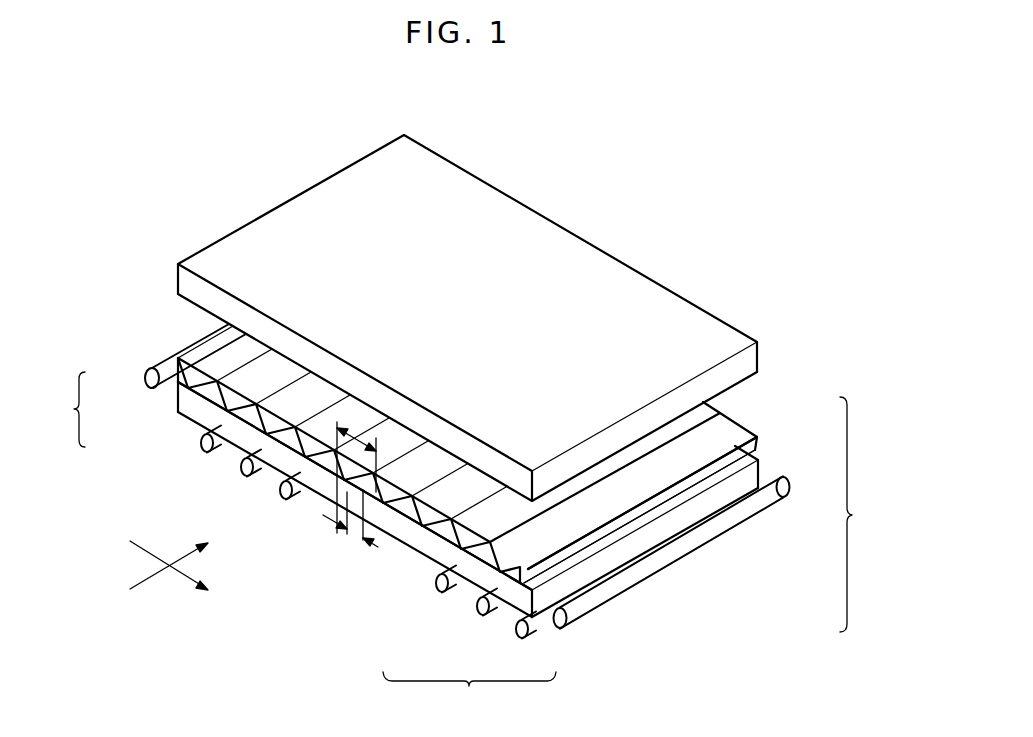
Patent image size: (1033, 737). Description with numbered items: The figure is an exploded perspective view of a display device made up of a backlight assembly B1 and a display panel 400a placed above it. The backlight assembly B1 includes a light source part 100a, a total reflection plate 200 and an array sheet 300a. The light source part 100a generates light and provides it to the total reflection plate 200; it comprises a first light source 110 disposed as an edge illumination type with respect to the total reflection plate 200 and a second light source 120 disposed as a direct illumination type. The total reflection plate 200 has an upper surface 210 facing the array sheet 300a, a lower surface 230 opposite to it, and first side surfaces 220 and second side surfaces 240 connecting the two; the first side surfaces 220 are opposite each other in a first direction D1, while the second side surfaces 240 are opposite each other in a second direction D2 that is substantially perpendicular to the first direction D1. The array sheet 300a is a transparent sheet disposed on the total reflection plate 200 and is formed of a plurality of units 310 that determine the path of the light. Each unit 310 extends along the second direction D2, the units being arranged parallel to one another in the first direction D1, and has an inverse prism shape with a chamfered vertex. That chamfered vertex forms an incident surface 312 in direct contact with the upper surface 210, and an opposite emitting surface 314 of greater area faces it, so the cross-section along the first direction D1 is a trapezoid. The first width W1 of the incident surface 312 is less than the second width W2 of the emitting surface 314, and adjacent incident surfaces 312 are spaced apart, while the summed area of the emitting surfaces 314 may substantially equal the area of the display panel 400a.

The display panel 400a is at (749, 356).
The array sheet 300a is at (745, 423).
The units 310 is at (727, 572).
The incident surface 312 is at (563, 597).
The emitting surface 314 is at (560, 538).
The total reflection plate 200 is at (469, 691).
The upper surface 210 is at (488, 566).
The first side surfaces 220 is at (533, 623).
The lower surface 230 is at (446, 562).
The second side surfaces 240 is at (418, 540).
The light source part 100a is at (56, 409).
The first light source 110 is at (145, 378).
The second light source 120 is at (201, 441).
The first width W1 is at (339, 518).
The second width W2 is at (356, 470).
The backlight assembly B1 is at (859, 514).
The first direction D1 is at (183, 573).
The second direction D2 is at (183, 560).